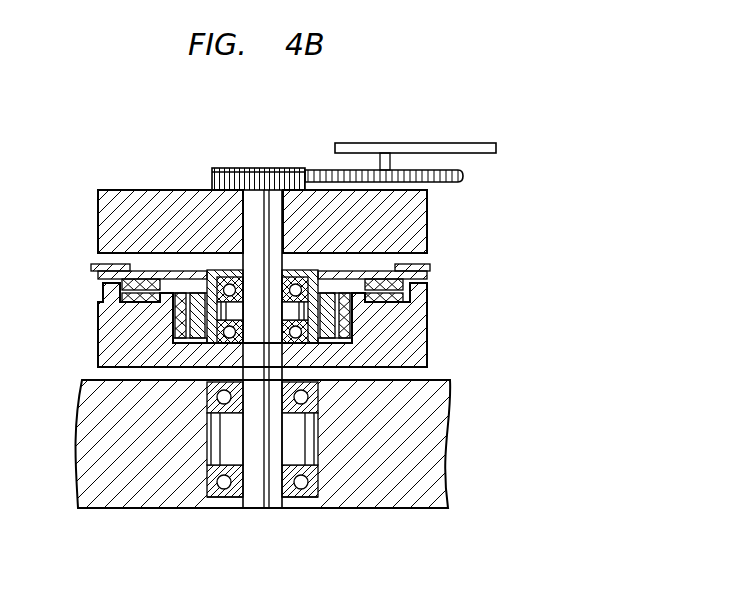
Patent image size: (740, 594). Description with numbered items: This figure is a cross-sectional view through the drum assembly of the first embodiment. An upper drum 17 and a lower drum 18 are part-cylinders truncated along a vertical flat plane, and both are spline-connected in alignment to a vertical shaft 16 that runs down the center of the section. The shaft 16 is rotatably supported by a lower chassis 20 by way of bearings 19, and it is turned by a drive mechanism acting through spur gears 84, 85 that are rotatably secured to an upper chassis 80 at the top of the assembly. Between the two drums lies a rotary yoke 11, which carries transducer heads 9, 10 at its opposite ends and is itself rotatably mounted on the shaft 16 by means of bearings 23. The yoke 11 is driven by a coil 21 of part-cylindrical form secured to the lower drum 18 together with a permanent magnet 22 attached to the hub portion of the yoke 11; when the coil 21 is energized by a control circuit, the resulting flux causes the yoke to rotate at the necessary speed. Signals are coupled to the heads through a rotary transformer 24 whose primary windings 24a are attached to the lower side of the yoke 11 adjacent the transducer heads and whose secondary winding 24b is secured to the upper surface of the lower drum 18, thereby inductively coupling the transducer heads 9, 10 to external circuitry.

The transducer head 9 is at (94, 266).
The transducer head 10 is at (431, 267).
The rotary yoke 11 is at (168, 271).
The vertical shaft 16 is at (258, 505).
The upper drum 17 is at (98, 212).
The lower drum 18 is at (427, 318).
The bearings 19 is at (214, 482).
The lower chassis 20 is at (443, 447).
The coil 21 is at (180, 318).
The permanent magnet 22 is at (186, 341).
The bearings 23 is at (311, 275).
The rotary transformer 24 is at (201, 295).
The primary windings 24a is at (103, 288).
The secondary winding 24b is at (103, 298).
The upper chassis 80 is at (481, 143).
The spur gear 84 is at (230, 168).
The spur gear 85 is at (463, 177).